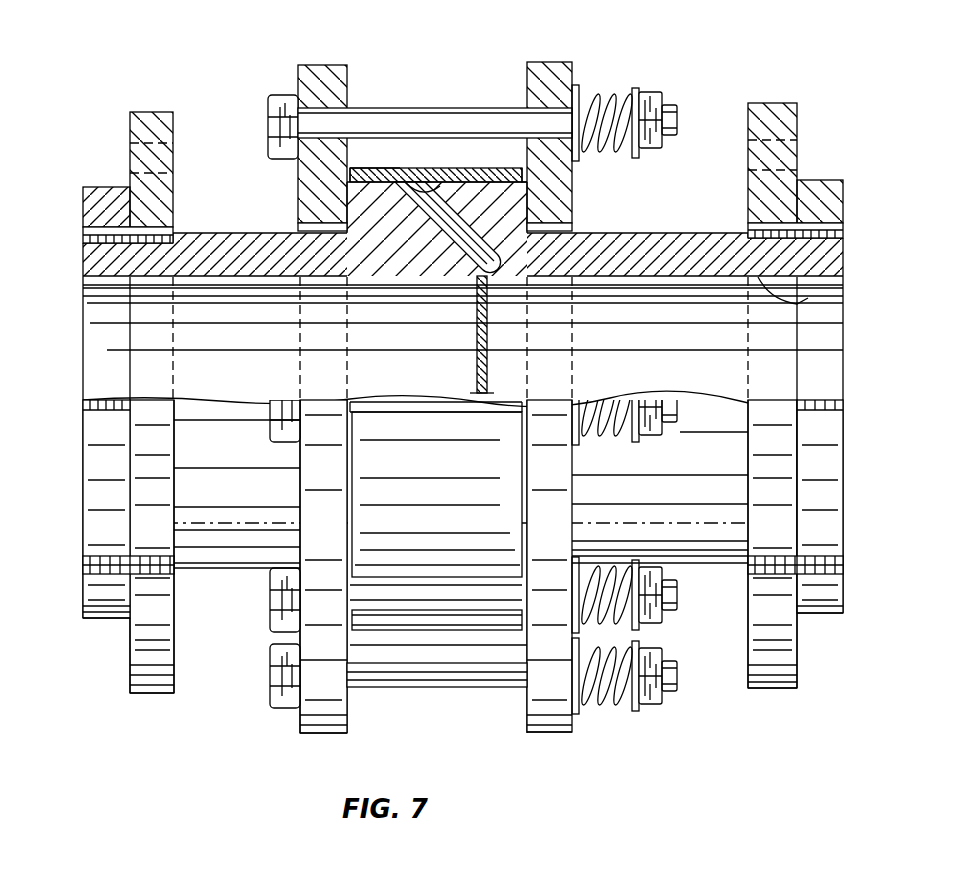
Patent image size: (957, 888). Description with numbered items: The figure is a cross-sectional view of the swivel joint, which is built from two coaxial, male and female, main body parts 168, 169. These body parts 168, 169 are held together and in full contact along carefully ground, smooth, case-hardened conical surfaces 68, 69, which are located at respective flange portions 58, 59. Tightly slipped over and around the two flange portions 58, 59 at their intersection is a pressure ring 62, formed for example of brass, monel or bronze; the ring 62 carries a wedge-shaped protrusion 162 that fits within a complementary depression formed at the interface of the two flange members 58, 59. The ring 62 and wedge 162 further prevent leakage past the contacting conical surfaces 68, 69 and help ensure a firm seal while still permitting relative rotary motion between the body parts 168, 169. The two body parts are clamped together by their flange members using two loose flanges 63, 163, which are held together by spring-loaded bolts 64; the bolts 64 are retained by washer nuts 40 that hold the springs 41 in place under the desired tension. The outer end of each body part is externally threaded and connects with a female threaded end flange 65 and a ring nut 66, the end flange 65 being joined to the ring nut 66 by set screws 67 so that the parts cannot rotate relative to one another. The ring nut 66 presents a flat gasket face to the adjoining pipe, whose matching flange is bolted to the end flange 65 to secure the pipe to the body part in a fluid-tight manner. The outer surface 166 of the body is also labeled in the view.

The washer nut 40 is at (643, 93).
The spring 41 is at (600, 93).
The flange portion 58 is at (397, 168).
The flange portion 59 is at (513, 197).
The pressure ring 62 is at (432, 182).
The loose flange 63 is at (550, 62).
The spring-loaded bolt 64 is at (500, 108).
The end flange 65 is at (132, 120).
The ring nut 66 is at (835, 182).
The set screw 67 is at (750, 216).
The conical surface 68 is at (435, 245).
The conical surface 69 is at (505, 265).
The wedge-shaped protrusion 162 is at (440, 183).
The loose flange 163 is at (318, 65).
The outer surface 166 is at (712, 233).
The main body part 168 is at (220, 233).
The main body part 169 is at (640, 232).